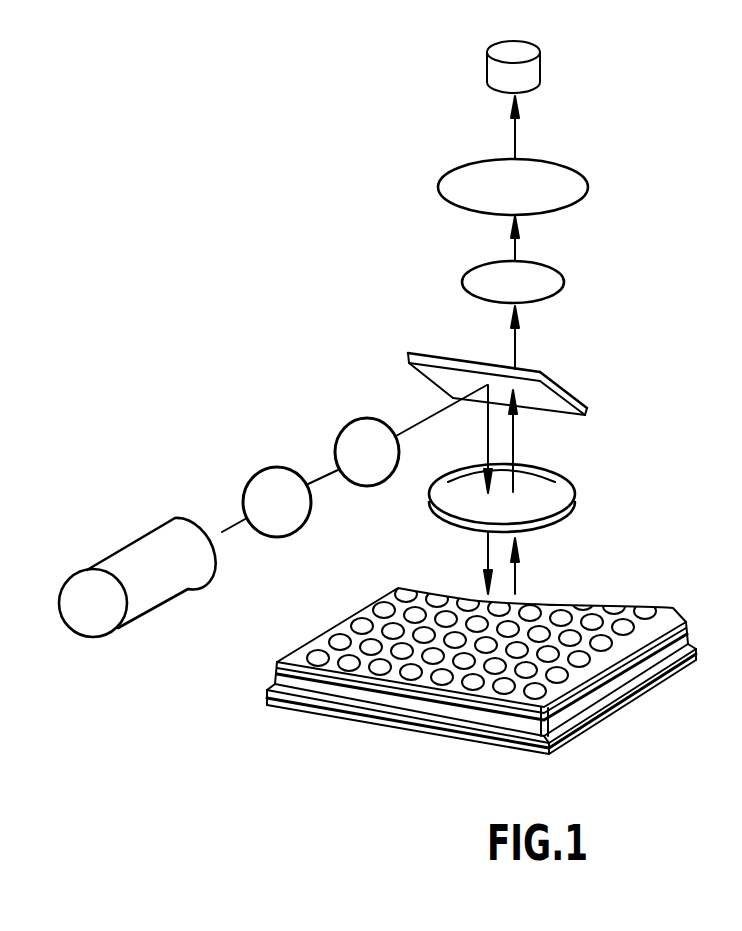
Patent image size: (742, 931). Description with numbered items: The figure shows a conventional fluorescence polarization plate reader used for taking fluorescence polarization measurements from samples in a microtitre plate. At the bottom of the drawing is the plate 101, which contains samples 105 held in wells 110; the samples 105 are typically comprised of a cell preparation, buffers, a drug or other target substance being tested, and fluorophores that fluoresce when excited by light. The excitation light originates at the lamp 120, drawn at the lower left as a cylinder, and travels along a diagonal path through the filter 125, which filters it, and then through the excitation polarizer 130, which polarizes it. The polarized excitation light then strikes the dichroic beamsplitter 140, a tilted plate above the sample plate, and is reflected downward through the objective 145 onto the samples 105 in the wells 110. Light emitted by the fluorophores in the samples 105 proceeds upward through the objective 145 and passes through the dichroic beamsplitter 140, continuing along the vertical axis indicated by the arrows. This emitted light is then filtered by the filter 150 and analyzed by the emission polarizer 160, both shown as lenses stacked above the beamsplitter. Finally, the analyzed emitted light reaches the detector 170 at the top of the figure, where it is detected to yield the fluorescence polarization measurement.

The plate 101 is at (397, 729).
The samples 105 is at (318, 656).
The wells 110 is at (622, 603).
The lamp 120 is at (150, 533).
The filter 125 is at (263, 470).
The excitation polarizer 130 is at (358, 418).
The dichroic beamsplitter 140 is at (566, 390).
The objective 145 is at (575, 490).
The filter 150 is at (562, 283).
The emission polarizer 160 is at (588, 185).
The detector 170 is at (540, 72).